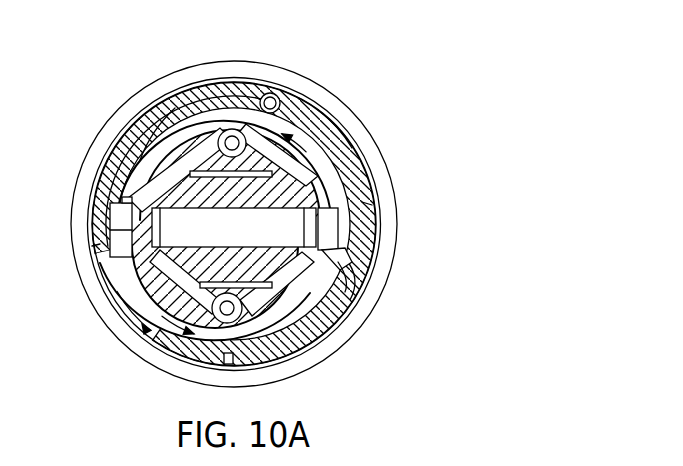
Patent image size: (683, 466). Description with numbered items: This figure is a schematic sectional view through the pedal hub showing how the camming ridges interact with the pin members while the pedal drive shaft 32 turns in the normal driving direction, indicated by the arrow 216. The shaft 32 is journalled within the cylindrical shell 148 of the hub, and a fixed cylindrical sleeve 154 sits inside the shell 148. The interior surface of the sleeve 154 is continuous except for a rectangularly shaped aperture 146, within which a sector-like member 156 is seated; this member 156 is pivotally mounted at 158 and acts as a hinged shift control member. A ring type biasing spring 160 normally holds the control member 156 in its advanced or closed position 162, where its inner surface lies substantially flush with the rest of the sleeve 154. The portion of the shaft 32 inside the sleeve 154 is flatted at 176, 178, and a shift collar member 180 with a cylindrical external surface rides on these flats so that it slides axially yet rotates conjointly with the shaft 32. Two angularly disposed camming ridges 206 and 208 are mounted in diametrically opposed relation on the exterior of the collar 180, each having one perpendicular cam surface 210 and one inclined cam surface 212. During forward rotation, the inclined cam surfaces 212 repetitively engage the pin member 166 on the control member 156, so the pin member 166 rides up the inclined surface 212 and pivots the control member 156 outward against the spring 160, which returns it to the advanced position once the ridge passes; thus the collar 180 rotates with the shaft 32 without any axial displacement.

The pedal drive shaft 32 is at (296, 343).
The rectangularly shaped aperture 146 is at (255, 107).
The cylindrical shell 148 is at (333, 93).
The fixed cylindrical sleeve 154 is at (183, 100).
The sector-like member 156 is at (355, 141).
The pivot 158 is at (268, 93).
The ring type biasing spring 160 is at (170, 108).
The advanced or closed position 162 is at (356, 274).
The pin member 166 is at (352, 298).
The flatted portion 176 is at (140, 150).
The flatted portion 178 is at (93, 286).
The shift collar member 180 is at (212, 130).
The camming ridge 206 is at (340, 247).
The camming ridge 208 is at (112, 212).
The perpendicular cam surface 210 is at (125, 185).
The inclined cam surface 212 is at (103, 243).
The arrow 216 is at (338, 148).